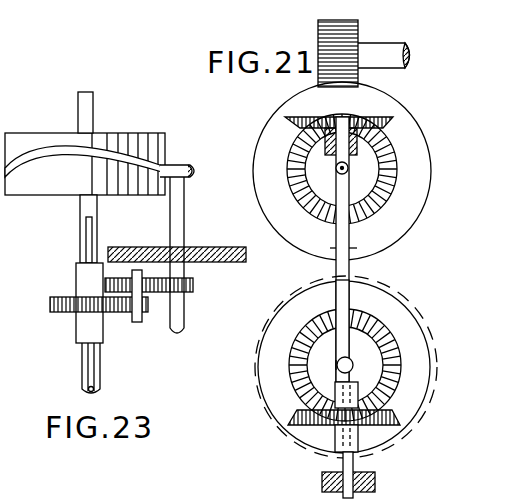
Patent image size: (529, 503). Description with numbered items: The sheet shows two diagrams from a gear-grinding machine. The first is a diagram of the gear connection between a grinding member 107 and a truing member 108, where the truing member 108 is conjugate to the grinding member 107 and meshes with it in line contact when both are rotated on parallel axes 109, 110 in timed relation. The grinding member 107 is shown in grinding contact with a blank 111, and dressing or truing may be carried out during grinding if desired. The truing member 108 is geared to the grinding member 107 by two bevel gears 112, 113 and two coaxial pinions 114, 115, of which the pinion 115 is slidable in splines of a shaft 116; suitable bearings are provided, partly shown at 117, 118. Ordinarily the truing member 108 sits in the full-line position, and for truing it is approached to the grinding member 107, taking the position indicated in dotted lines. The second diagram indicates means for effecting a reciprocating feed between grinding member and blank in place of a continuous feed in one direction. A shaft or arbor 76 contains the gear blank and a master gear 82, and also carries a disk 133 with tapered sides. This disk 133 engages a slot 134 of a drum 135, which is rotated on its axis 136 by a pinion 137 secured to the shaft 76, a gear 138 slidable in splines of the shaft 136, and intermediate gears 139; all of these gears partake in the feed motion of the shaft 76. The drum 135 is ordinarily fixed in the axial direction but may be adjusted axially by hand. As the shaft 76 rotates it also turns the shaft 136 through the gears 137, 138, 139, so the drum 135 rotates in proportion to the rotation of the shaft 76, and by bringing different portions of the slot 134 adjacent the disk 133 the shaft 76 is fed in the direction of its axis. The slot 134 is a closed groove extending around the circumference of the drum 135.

In FIG. 21, the blank 111 is at (343, 42).
In FIG. 21, the pinion 114 is at (365, 126).
In FIG. 21, the bearing 117 is at (325, 143).
In FIG. 21, the grinding member 107 is at (272, 160).
In FIG. 21, the axis 109 is at (338, 170).
In FIG. 21, the bevel gear 112 is at (354, 198).
In FIG. 21, the truing member 108 is at (263, 301).
In FIG. 21, the bevel gear 113 is at (300, 332).
In FIG. 21, the axis 110 is at (343, 366).
In FIG. 21, the pinion 115 is at (380, 423).
In FIG. 21, the shaft 116 is at (350, 466).
In FIG. 21, the bearing 118 is at (375, 479).
In FIG. 23, the drum 135 is at (37, 142).
In FIG. 23, the slot 134 is at (135, 163).
In FIG. 23, the disk 133 is at (180, 165).
In FIG. 23, the axis 136 is at (82, 208).
In FIG. 23, the shaft or arbor 76 is at (178, 220).
In FIG. 23, the master gear 82 is at (228, 246).
In FIG. 23, the pinion 137 is at (195, 285).
In FIG. 23, the gear 138 is at (70, 300).
In FIG. 23, the intermediate gears 139 is at (148, 292).